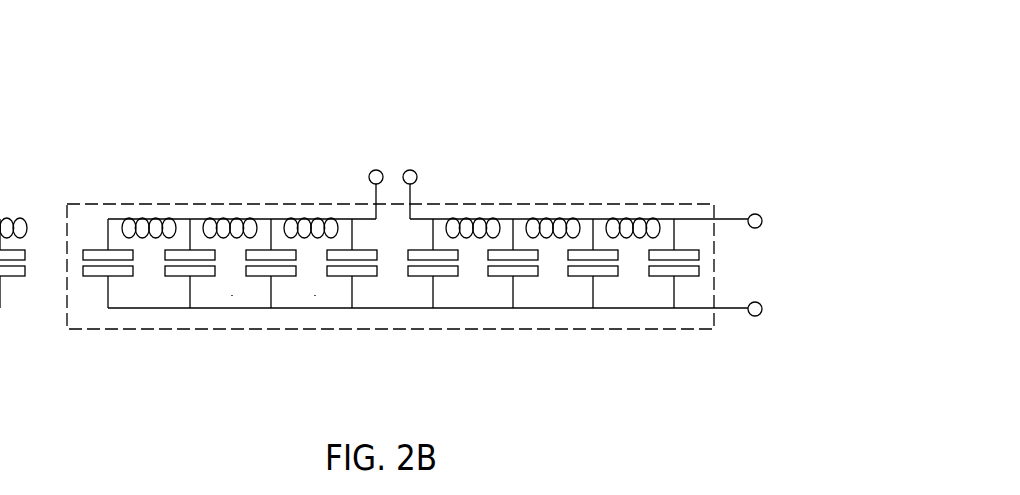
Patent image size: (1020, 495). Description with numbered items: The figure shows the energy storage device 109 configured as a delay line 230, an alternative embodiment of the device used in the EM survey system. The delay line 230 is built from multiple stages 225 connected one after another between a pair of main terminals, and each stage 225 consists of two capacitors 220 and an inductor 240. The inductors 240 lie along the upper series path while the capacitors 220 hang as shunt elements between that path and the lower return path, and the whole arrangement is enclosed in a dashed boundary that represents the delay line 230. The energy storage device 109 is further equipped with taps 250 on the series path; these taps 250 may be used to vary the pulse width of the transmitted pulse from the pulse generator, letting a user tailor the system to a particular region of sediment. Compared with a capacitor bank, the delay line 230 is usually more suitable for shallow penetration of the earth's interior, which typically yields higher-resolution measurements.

The energy storage device 109 is at (459, 215).
The capacitors 220 is at (349, 303).
The stages 225 is at (88, 222).
The delay line 230 is at (390, 243).
The inductor 240 is at (330, 189).
The taps 250 is at (426, 167).